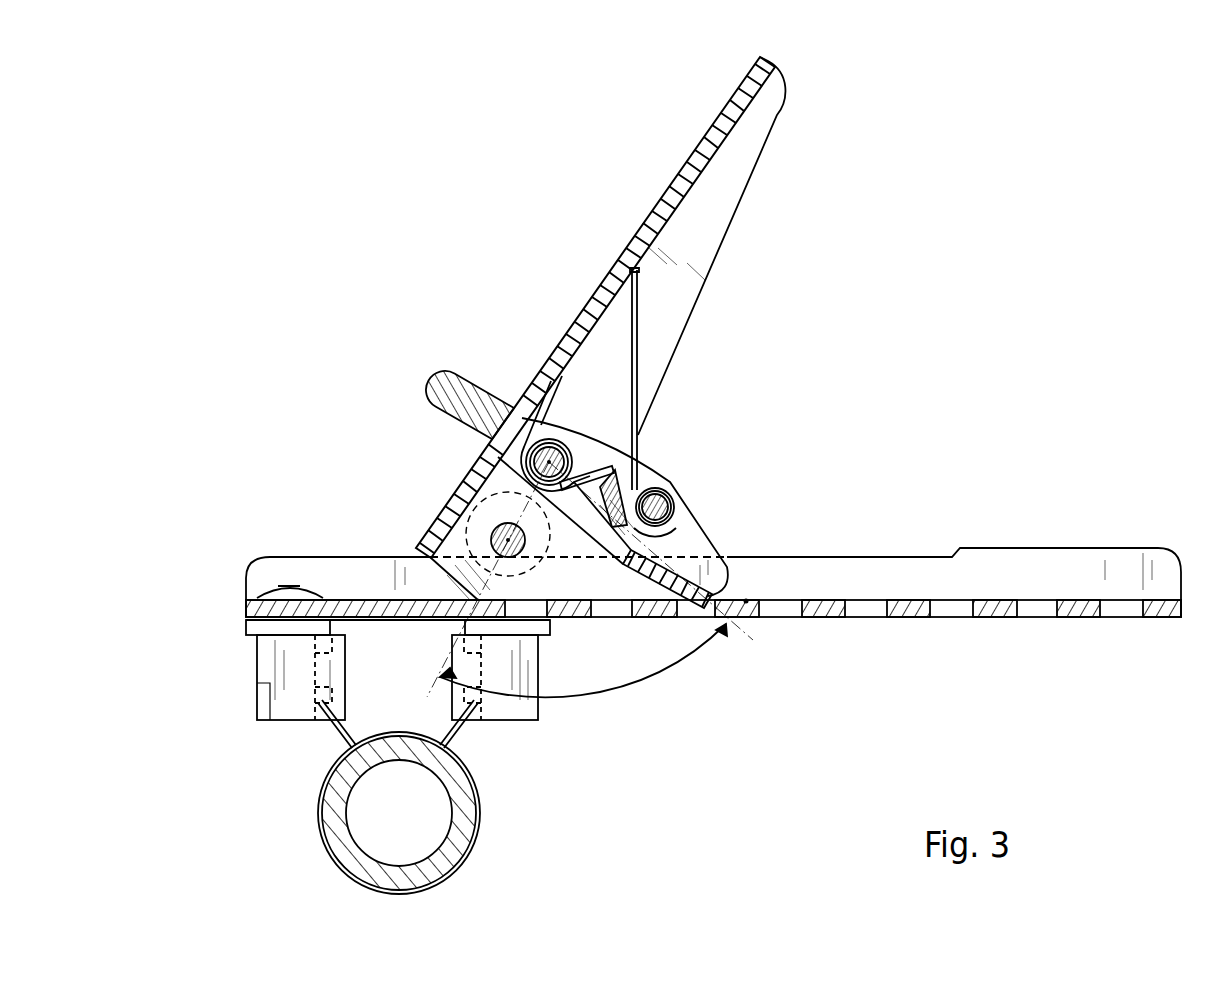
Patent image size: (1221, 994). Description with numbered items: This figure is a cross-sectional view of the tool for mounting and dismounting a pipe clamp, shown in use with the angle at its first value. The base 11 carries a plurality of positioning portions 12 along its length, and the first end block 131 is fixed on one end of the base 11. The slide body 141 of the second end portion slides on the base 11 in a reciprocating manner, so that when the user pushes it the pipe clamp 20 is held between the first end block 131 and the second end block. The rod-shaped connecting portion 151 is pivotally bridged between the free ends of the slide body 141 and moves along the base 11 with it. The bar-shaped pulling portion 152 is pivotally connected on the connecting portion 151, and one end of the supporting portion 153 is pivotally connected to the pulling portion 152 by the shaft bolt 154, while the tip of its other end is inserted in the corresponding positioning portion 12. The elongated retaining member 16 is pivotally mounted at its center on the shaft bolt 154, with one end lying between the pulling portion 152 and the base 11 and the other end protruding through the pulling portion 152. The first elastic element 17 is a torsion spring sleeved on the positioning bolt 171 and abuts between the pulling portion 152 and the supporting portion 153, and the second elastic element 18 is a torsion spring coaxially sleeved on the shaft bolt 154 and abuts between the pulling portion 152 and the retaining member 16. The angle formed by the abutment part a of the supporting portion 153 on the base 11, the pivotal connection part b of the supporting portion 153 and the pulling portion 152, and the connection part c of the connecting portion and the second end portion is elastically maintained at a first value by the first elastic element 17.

The base 11 is at (905, 557).
The positioning portion 12 is at (783, 615).
The first end block 131 is at (257, 685).
The slide body 141 is at (506, 716).
The pipe clamp 20 is at (318, 813).
The connecting portion 151 is at (490, 540).
The pulling portion 152 is at (688, 152).
The supporting portion 153 is at (697, 543).
The shaft bolt 154 is at (535, 463).
The retaining member 16 is at (470, 364).
The first elastic element 17 is at (636, 348).
The positioning bolt 171 is at (668, 490).
The second elastic element 18 is at (590, 366).
The abutment part a is at (746, 600).
The pivotal connection part b is at (549, 462).
The connection part c is at (507, 540).